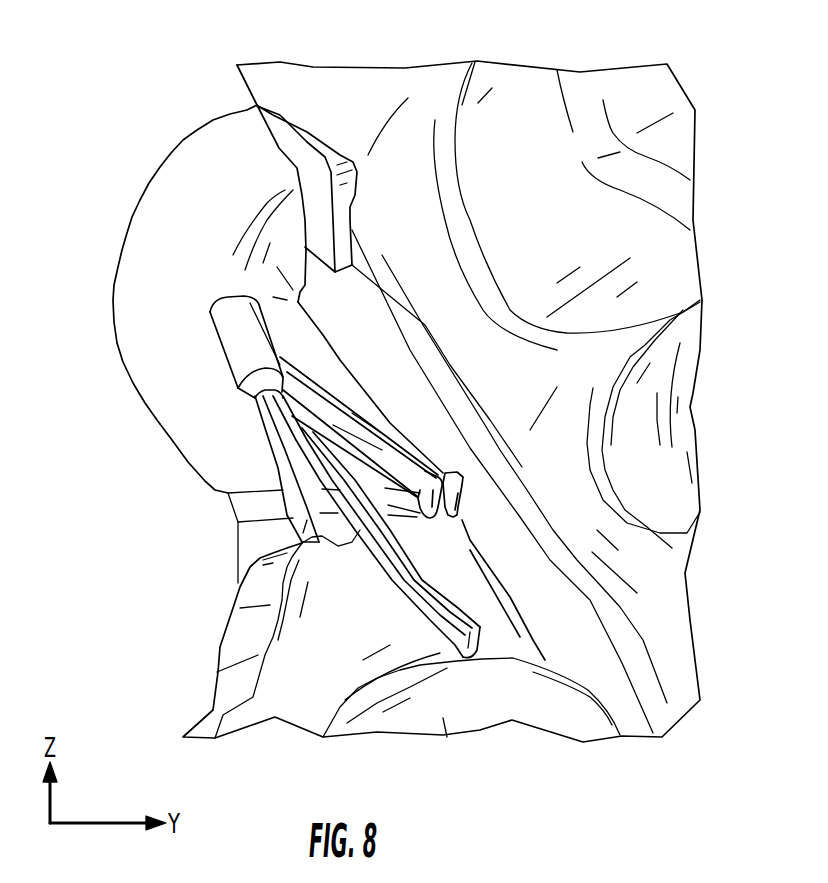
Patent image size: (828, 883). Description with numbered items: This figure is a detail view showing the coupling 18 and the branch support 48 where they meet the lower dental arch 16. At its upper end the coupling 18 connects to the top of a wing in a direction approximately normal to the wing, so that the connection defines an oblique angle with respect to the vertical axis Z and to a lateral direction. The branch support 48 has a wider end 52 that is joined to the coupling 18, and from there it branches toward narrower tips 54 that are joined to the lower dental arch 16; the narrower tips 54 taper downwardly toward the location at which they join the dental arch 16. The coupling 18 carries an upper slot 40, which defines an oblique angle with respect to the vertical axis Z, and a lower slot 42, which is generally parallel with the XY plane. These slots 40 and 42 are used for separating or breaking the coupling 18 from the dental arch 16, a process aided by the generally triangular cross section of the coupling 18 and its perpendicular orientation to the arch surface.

The lower dental arch 16 is at (378, 87).
The coupling 18 is at (148, 277).
The upper slot 40 is at (302, 168).
The lower slot 42 is at (232, 507).
The branch support 48 is at (257, 383).
The wider end 52 is at (235, 327).
The narrower tips 54 is at (470, 645).